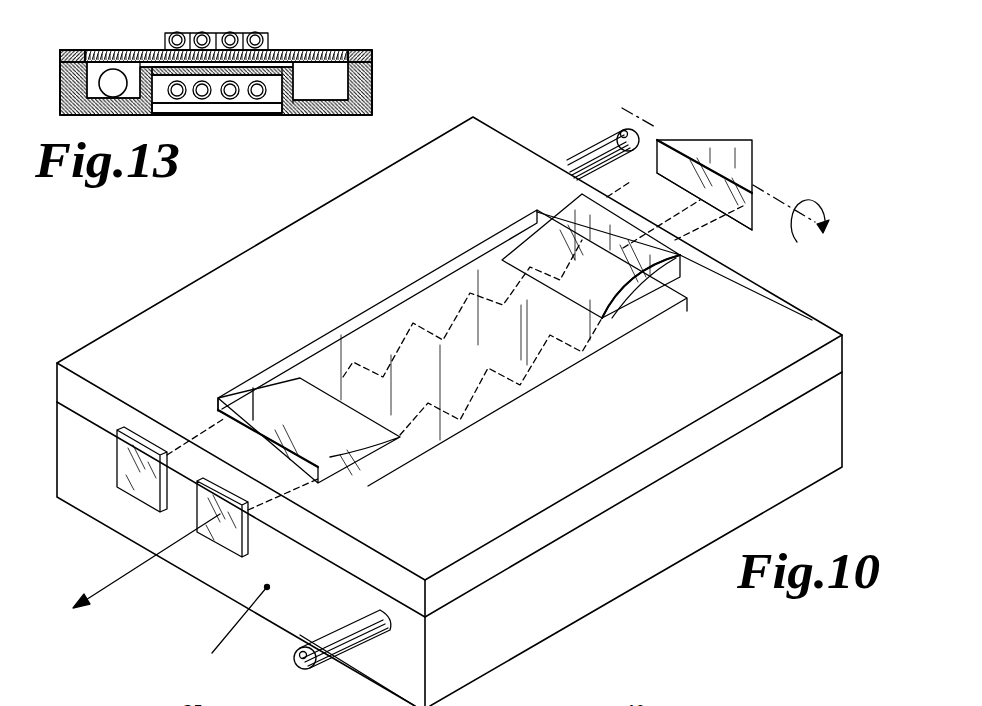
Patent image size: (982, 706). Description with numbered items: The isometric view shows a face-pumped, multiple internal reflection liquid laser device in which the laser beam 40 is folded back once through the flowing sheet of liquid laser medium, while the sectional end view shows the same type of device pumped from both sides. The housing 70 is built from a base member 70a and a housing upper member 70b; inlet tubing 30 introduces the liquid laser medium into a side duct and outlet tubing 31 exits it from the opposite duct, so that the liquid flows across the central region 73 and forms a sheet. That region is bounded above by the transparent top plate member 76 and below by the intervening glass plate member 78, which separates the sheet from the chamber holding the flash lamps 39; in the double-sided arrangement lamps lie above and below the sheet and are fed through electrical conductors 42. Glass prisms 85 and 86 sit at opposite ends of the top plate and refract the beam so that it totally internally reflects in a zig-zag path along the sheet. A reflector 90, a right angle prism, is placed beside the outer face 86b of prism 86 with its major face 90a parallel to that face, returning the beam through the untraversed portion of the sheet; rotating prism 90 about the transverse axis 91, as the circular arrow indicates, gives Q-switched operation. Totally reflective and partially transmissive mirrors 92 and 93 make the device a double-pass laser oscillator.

In FIG. 10, the tubing 30 is at (338, 668).
In FIG. 13, the tubing 31 is at (113, 83).
In FIG. 10, the tubing 31 is at (595, 145).
In FIG. 13, the flash lamps 39 is at (258, 32).
In FIG. 10, the laser beam 40 is at (140, 575).
In FIG. 10, the electrical conductors 42 is at (214, 652).
In FIG. 13, the housing 70 is at (302, 117).
In FIG. 10, the housing 70 is at (633, 595).
In FIG. 13, the base member 70a is at (373, 90).
In FIG. 10, the base member 70a is at (557, 637).
In FIG. 13, the housing upper member 70b is at (373, 60).
In FIG. 10, the housing upper member 70b is at (110, 330).
In FIG. 13, the central region 73 is at (243, 64).
In FIG. 13, the top plate member 76 is at (313, 50).
In FIG. 10, the top plate member 76 is at (390, 296).
In FIG. 13, the intervening planar glass plate member 78 is at (270, 100).
In FIG. 10, the glass prism 85 is at (245, 397).
In FIG. 13, the glass prism 86 is at (187, 33).
In FIG. 10, the glass prism 86 is at (563, 205).
In FIG. 10, the outer face 86b is at (683, 263).
In FIG. 10, the reflector 90 is at (722, 140).
In FIG. 10, the major face 90a is at (740, 222).
In FIG. 10, the transverse axis 91 is at (773, 193).
In FIG. 10, the totally reflective mirror 92 is at (117, 458).
In FIG. 10, the partially transmissive mirror 93 is at (220, 548).